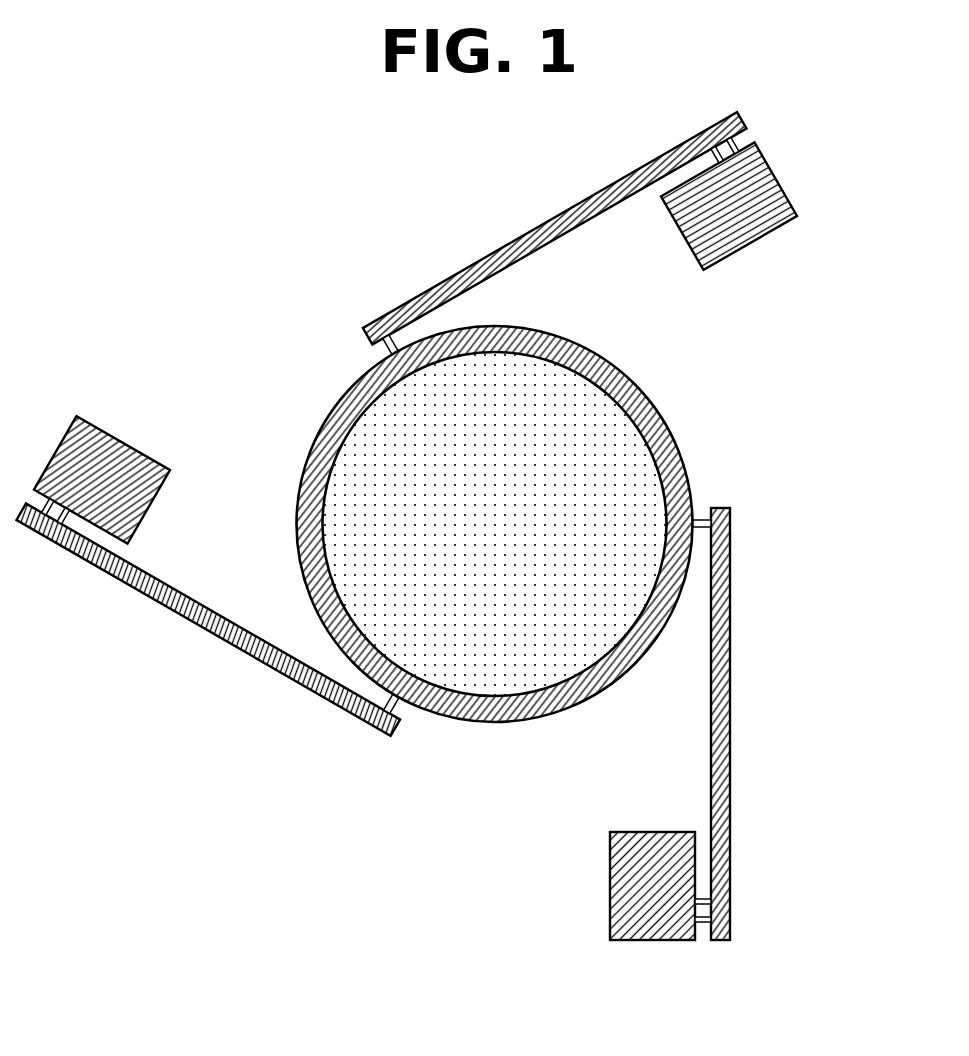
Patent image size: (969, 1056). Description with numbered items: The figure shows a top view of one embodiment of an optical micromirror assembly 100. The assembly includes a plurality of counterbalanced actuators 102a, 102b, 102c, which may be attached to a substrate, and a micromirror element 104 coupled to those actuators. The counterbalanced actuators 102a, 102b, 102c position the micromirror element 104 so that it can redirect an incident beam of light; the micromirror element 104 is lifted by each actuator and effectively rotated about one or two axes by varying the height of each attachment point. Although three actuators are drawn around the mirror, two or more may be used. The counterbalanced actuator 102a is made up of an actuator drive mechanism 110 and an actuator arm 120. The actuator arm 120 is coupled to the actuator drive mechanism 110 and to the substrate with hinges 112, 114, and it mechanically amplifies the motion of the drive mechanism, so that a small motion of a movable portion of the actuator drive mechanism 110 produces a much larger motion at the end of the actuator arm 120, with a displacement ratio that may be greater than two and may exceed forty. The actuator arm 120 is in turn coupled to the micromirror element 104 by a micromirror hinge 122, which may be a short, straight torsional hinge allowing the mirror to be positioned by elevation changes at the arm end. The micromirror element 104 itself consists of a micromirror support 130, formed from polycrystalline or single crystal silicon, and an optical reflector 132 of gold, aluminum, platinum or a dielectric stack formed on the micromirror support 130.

The optical micromirror assembly 100 is at (250, 187).
The counterbalanced actuator 102a is at (756, 760).
The counterbalanced actuator 102b is at (490, 233).
The counterbalanced actuator 102c is at (224, 693).
The micromirror element 104 is at (286, 434).
The actuator drive mechanism 110 is at (610, 870).
The hinge 112 is at (700, 899).
The hinge 114 is at (703, 922).
The actuator arm 120 is at (730, 630).
The micromirror hinge 122 is at (703, 520).
The micromirror support 130 is at (580, 343).
The optical reflector 132 is at (613, 397).